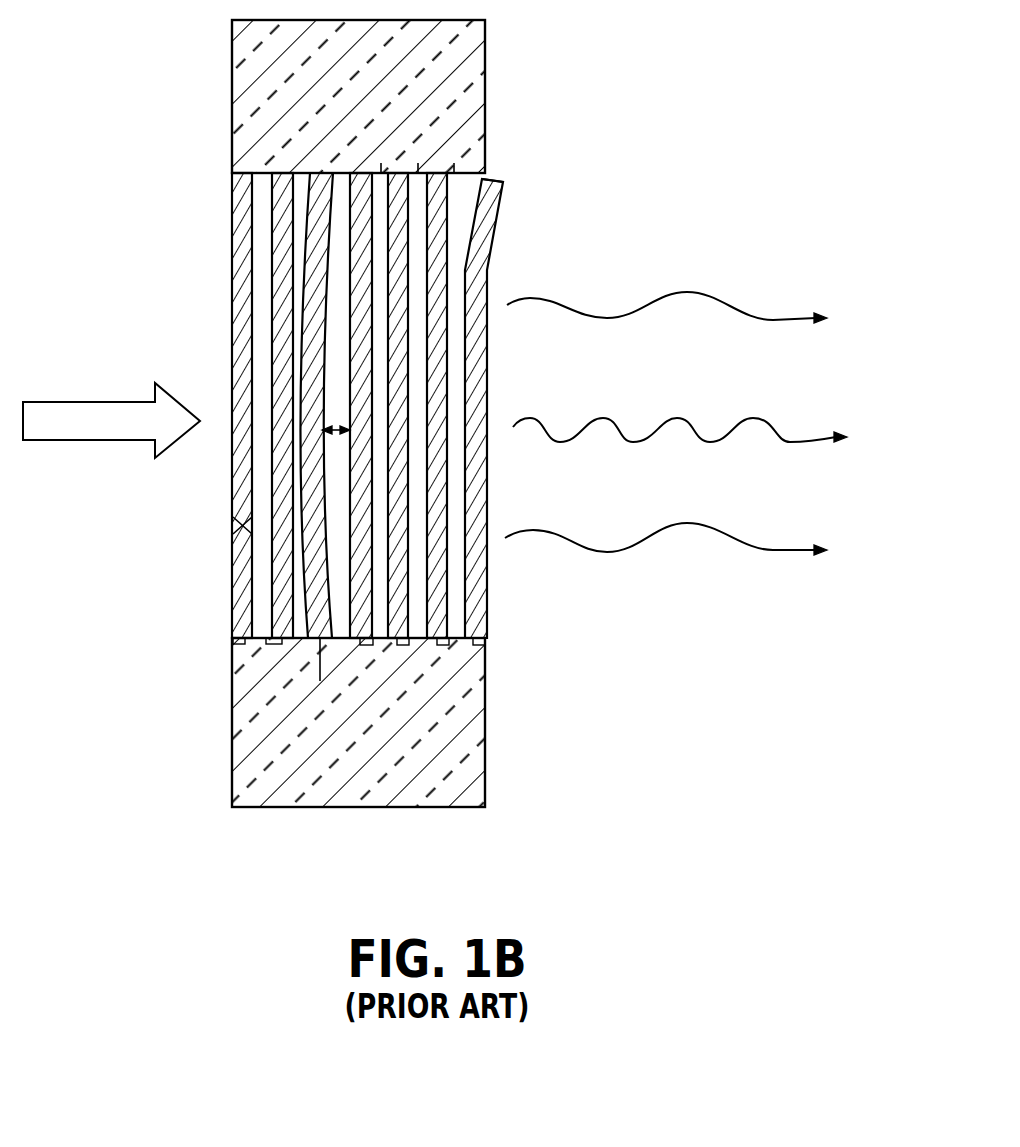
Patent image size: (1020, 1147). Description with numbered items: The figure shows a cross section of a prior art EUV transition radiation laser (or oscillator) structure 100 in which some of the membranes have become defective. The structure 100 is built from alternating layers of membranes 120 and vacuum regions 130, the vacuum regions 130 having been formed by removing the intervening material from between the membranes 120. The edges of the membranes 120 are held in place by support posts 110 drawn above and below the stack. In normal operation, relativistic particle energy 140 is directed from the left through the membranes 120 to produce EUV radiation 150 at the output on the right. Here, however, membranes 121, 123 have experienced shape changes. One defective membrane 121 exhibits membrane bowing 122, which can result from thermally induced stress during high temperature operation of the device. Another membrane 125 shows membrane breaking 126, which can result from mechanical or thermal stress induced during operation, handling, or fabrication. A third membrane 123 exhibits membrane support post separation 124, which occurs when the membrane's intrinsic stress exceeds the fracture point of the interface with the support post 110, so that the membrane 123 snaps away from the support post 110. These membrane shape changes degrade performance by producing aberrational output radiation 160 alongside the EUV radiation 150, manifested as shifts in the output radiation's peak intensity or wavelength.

The TRL structure 100 is at (408, 466).
The support post 110 is at (485, 83).
The membranes 120 is at (268, 648).
The defective membrane 121 is at (320, 681).
The membrane bowing 122 is at (332, 410).
The separated membrane 123 is at (495, 233).
The membrane support post separation 124 is at (504, 173).
The membrane 125 is at (246, 287).
The membrane breaking 126 is at (222, 528).
The vacuum regions 130 is at (381, 163).
The relativistic particle energy 140 is at (111, 420).
The EUV radiation 150 is at (698, 426).
The aberrational output radiation 160 is at (706, 435).